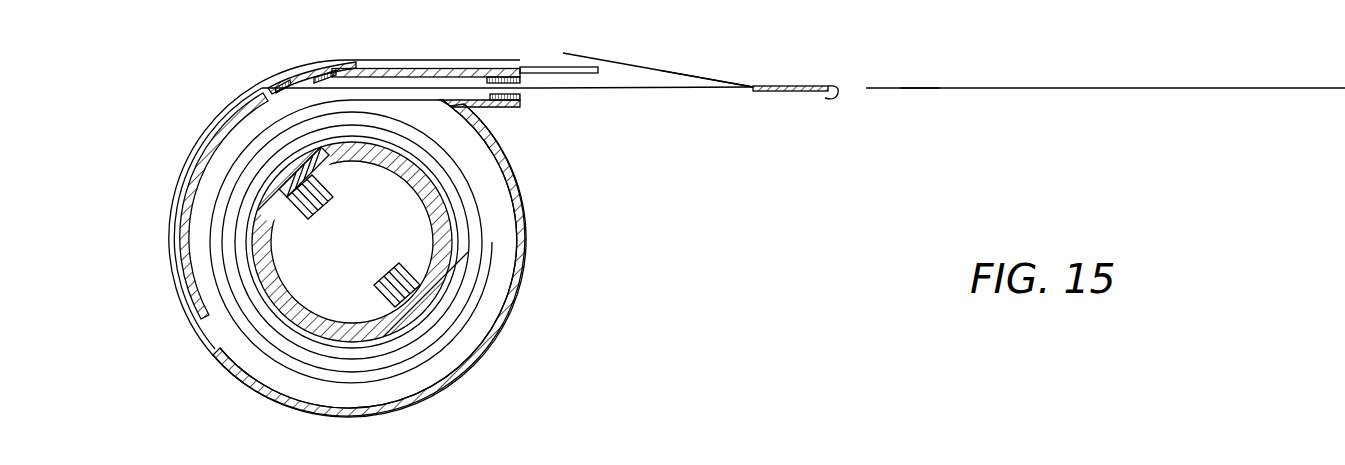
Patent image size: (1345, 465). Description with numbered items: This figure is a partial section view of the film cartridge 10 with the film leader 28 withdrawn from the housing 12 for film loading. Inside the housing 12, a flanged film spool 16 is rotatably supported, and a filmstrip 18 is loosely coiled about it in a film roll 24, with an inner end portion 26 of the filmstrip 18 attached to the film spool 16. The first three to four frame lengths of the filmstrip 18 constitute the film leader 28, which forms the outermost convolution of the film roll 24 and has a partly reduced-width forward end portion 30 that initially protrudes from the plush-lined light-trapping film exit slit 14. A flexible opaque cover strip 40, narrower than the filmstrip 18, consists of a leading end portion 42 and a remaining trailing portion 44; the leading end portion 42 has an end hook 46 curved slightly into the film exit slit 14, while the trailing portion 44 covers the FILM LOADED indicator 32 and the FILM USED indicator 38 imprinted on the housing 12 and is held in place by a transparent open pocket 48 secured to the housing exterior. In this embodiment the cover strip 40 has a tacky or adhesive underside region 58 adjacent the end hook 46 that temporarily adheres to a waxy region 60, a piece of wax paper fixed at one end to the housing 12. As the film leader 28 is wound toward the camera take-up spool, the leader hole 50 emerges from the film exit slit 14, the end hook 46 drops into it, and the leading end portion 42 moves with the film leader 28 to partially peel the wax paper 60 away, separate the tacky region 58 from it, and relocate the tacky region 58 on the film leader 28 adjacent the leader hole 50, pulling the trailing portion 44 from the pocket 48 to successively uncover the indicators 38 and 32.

The film cartridge 10 is at (543, 287).
The housing 12 is at (517, 308).
The film exit slit 14 is at (530, 85).
The film spool 16 is at (432, 301).
The filmstrip 18 is at (453, 346).
The film roll 24 is at (423, 340).
The inner end portion 26 is at (385, 148).
The film leader 28 is at (915, 104).
The forward end portion 30 is at (1288, 88).
The FILM LOADED indicator 32 is at (320, 62).
The FILM USED indicator 38 is at (188, 156).
The cover strip 40 is at (699, 62).
The leading end portion 42 is at (833, 84).
The remaining trailing portion 44 is at (625, 62).
The end hook 46 is at (834, 100).
The transparent open pocket 48 is at (423, 60).
The leader hole 50 is at (866, 87).
The tacky region 58 is at (770, 91).
The waxy region 60 is at (542, 64).